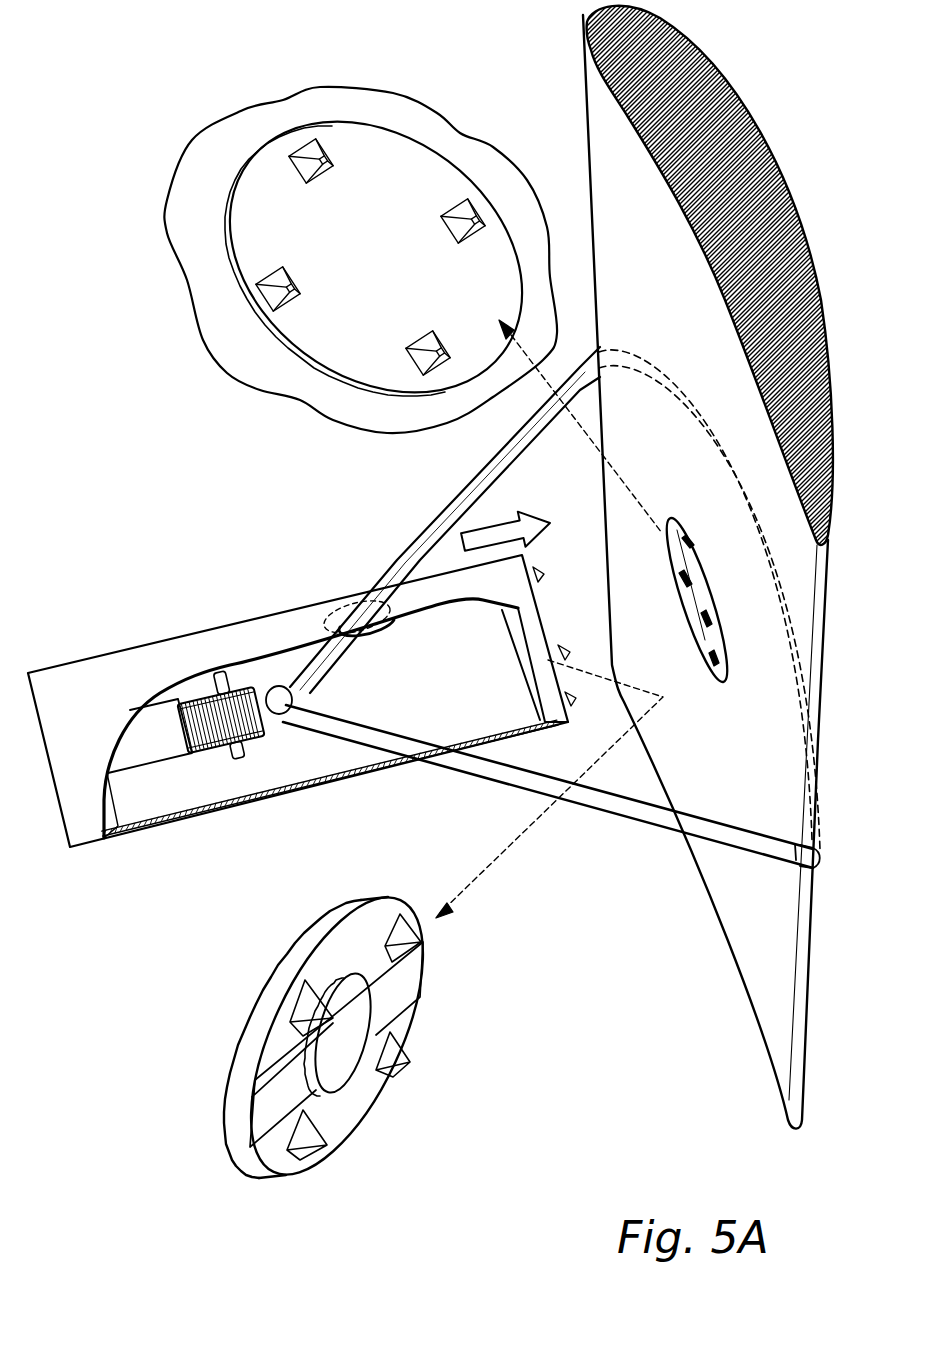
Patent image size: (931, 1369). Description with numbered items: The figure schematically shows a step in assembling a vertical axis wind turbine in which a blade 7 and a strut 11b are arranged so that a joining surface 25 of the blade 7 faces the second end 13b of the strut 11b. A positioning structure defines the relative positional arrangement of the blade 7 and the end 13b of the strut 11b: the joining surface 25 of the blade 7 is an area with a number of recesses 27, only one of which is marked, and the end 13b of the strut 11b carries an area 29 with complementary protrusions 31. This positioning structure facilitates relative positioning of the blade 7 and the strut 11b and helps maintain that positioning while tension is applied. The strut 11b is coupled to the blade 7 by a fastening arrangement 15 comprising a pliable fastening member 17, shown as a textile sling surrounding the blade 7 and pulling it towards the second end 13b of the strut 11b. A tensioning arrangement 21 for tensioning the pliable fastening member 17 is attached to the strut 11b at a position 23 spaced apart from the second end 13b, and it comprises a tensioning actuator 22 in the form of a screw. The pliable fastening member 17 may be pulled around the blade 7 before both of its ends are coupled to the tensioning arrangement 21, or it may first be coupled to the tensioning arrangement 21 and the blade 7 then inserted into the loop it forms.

The blade 7 is at (790, 193).
The joining surface 25 is at (383, 275).
The recesses 27 is at (275, 288).
The strut 11b is at (93, 660).
The tensioning arrangement 21 is at (200, 688).
The tensioning actuator 22 is at (213, 753).
The position 23 is at (115, 838).
The fastening arrangement 15 is at (284, 736).
The second end of the strut 13b is at (548, 603).
The pliable fastening member 17 is at (767, 847).
The area with complementary protrusions 29 is at (357, 1130).
The protrusions 31 is at (397, 1050).